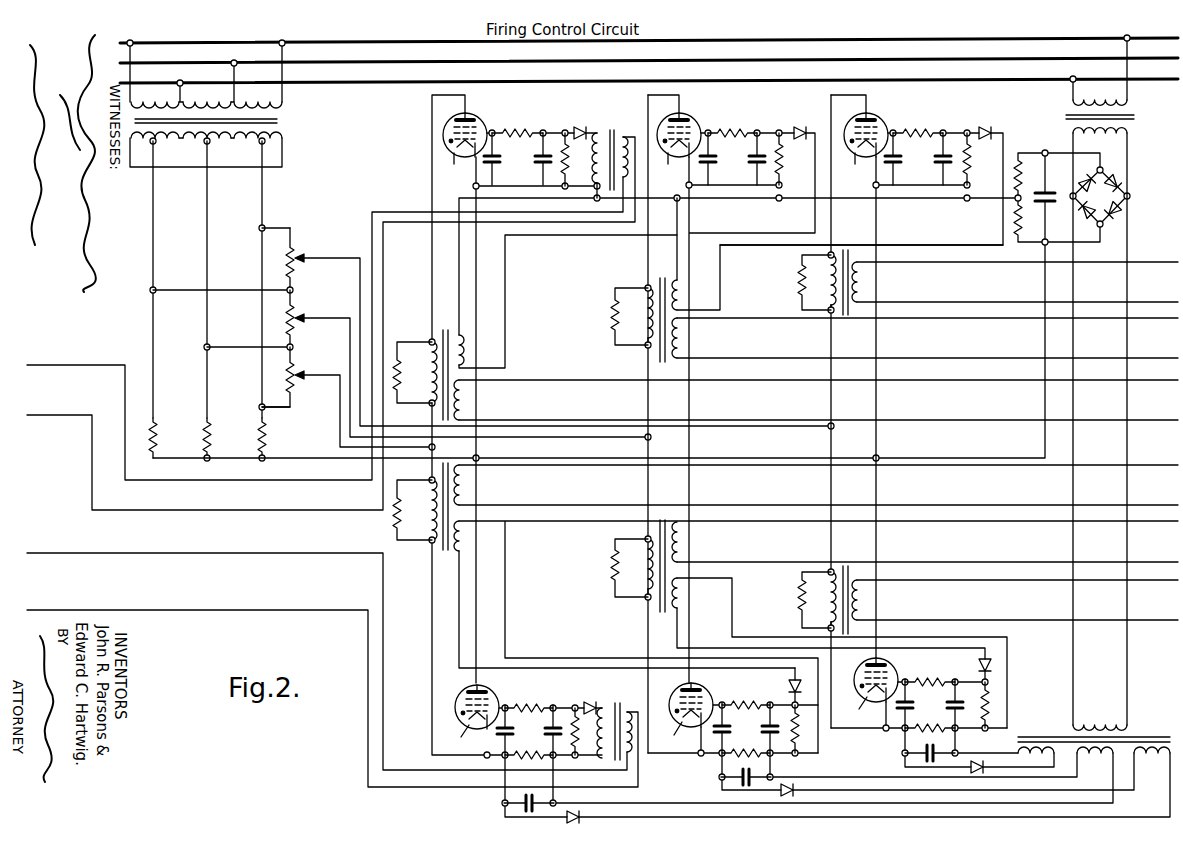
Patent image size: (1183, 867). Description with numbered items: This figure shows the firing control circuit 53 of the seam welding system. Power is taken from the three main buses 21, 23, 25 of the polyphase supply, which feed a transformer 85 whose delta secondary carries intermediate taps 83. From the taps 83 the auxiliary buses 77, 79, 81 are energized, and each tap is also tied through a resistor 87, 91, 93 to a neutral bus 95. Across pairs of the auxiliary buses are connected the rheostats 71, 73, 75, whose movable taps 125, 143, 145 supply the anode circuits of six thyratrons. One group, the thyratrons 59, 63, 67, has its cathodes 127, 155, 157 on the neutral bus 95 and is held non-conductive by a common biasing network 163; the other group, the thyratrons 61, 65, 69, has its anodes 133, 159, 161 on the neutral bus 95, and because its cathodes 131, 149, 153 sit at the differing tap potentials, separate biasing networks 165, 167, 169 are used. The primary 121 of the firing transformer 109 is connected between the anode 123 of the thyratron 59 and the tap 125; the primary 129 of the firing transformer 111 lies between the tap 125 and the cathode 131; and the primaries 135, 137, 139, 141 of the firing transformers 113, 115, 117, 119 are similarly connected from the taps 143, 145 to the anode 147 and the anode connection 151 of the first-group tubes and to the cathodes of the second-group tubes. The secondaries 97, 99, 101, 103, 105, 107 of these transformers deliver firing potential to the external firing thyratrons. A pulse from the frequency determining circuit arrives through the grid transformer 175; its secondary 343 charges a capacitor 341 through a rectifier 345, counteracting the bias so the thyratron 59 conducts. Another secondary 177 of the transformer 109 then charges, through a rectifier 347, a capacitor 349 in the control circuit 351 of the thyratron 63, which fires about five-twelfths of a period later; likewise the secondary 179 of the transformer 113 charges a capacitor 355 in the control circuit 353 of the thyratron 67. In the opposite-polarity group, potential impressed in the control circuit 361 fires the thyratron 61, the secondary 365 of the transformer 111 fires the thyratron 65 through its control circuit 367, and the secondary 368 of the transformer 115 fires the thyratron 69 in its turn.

The bus 21 is at (1019, 42).
The bus 23 is at (1019, 62).
The bus 25 is at (1019, 82).
The transformer 85 is at (316, 125).
The intermediate taps 83 is at (158, 144).
The auxiliary bus 81 is at (152, 330).
The auxiliary bus 79 is at (206, 376).
The auxiliary bus 77 is at (261, 376).
The resistor 93 is at (158, 435).
The resistor 91 is at (213, 435).
The resistor 87 is at (268, 435).
The neutral bus 95 is at (568, 458).
The rheostat 75 is at (296, 274).
The rheostat 73 is at (296, 332).
The rheostat 71 is at (296, 389).
The adjustable tap 145 is at (299, 258).
The adjustable tap 143 is at (299, 318).
The movable tap 125 is at (299, 373).
The anode 123 is at (448, 218).
The thyratron 59 is at (476, 119).
The cathode 127 is at (453, 167).
The rectifier 345 is at (578, 131).
The capacitor 341 is at (534, 170).
The secondary 343 is at (593, 128).
The grid transformer 175 is at (331, 311).
The firing transformer 109 is at (458, 331).
The primary 121 is at (429, 341).
The secondary 177 is at (464, 340).
The secondary 97 is at (476, 397).
The firing transformer 111 is at (456, 570).
The primary 129 is at (431, 482).
The secondary 99 is at (475, 489).
The secondary winding 365 is at (490, 534).
The thyratron 61 is at (467, 691).
The cathode 131 is at (460, 738).
The anode 133 is at (497, 692).
The control circuit 361 is at (542, 730).
The biasing network 165 is at (488, 815).
The anode 147 is at (664, 104).
The thyratron 63 is at (689, 118).
The cathode 155 is at (669, 166).
The firing control circuit 53 is at (750, 389).
The control circuit 351 is at (742, 157).
The capacitor 349 is at (745, 174).
The rectifier 347 is at (797, 130).
The firing transformer 113 is at (676, 275).
The primary 135 is at (640, 338).
The secondary 179 is at (680, 298).
The secondary winding 101 is at (683, 344).
The firing transformer 115 is at (680, 501).
The primary 137 is at (645, 539).
The secondary 103 is at (686, 547).
The secondary winding 368 is at (683, 597).
The thyratron 65 is at (679, 690).
The cathode 149 is at (675, 735).
The anode 159 is at (710, 695).
The control circuit 367 is at (759, 726).
The biasing network 167 is at (706, 788).
The anode lead 151 is at (848, 104).
The thyratron 67 is at (878, 118).
The cathode 157 is at (855, 166).
The control circuit 353 is at (926, 156).
The capacitor 355 is at (936, 162).
The firing transformer 117 is at (864, 241).
The primary 139 is at (807, 298).
The secondary 105 is at (874, 282).
The firing transformer 119 is at (862, 560).
The primary 141 is at (809, 615).
The secondary 107 is at (876, 601).
The common biasing network 163 is at (1053, 148).
The thyratron 69 is at (859, 665).
The cathode 153 is at (853, 709).
The anode 161 is at (900, 671).
The biasing network 169 is at (892, 758).